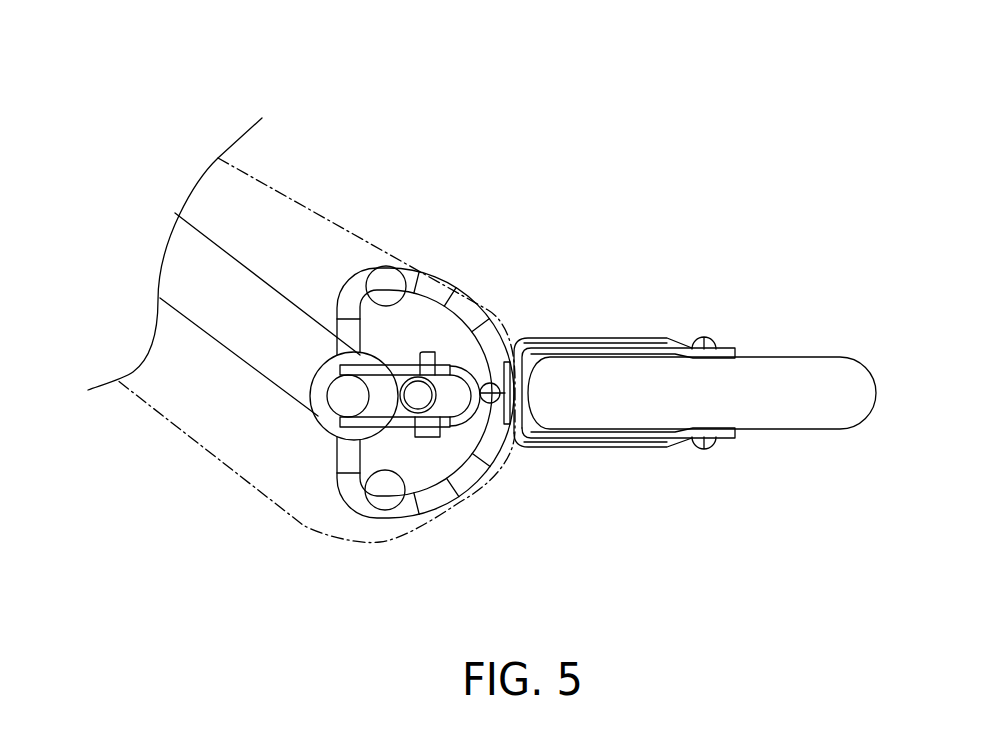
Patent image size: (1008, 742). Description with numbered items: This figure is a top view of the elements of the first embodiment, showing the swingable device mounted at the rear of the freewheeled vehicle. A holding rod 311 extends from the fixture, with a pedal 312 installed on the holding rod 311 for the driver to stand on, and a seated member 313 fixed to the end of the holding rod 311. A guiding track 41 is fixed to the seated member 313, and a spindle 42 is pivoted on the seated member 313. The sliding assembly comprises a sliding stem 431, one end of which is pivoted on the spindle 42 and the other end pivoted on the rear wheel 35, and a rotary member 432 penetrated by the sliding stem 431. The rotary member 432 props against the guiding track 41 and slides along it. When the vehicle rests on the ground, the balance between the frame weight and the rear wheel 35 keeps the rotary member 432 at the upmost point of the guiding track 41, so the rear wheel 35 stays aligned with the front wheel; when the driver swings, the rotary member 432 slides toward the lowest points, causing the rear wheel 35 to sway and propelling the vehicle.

The holding rod 311 is at (258, 330).
The pedal 312 is at (285, 196).
The seated member 313 is at (323, 412).
The guiding track 41 is at (430, 290).
The spindle 42 is at (357, 405).
The sliding stem 431 is at (455, 405).
The rotary member 432 is at (447, 402).
The rear wheel 35 is at (797, 405).